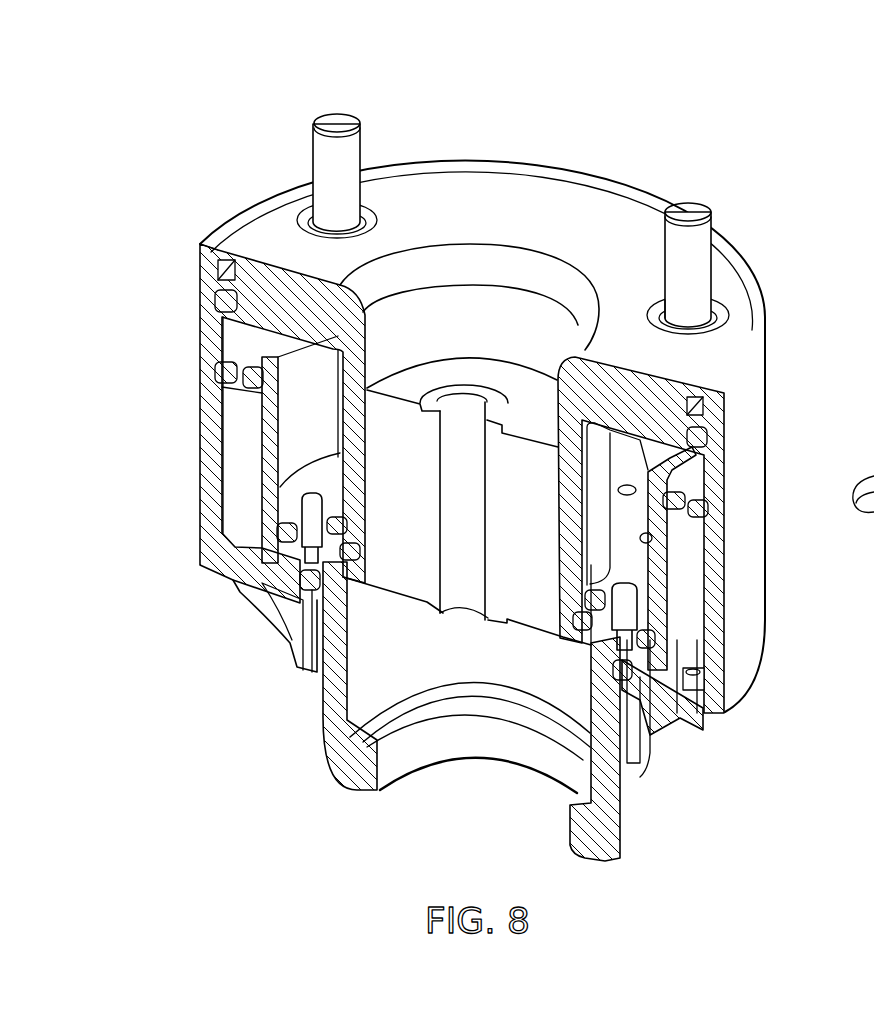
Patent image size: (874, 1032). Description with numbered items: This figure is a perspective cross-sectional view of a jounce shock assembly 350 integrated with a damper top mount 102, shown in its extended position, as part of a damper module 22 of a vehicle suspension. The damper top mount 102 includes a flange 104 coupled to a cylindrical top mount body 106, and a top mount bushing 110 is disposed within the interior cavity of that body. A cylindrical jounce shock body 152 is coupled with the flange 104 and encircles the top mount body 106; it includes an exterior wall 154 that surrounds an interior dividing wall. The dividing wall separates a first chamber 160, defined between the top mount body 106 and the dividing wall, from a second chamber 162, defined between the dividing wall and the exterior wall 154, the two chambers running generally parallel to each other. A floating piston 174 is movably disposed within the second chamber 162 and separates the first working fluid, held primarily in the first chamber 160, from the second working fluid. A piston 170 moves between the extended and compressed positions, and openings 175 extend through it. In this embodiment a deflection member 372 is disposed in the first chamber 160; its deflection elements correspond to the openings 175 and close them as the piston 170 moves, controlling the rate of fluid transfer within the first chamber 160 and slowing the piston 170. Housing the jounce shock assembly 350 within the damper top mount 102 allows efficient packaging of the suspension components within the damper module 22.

The damper module 22 is at (412, 88).
The damper top mount 102 is at (530, 139).
The flange 104 is at (665, 400).
The cylindrical top mount body 106 is at (405, 190).
The top mount bushing 110 is at (445, 373).
The cylindrical jounce shock body 152 is at (810, 593).
The exterior wall 154 is at (220, 556).
The first chamber 160 is at (286, 409).
The second chamber 162 is at (228, 475).
The piston 170 is at (632, 817).
The floating piston 174 is at (255, 385).
The opening 175 is at (640, 615).
The jounce shock assembly 350 is at (152, 358).
The deflection member 372 is at (645, 700).